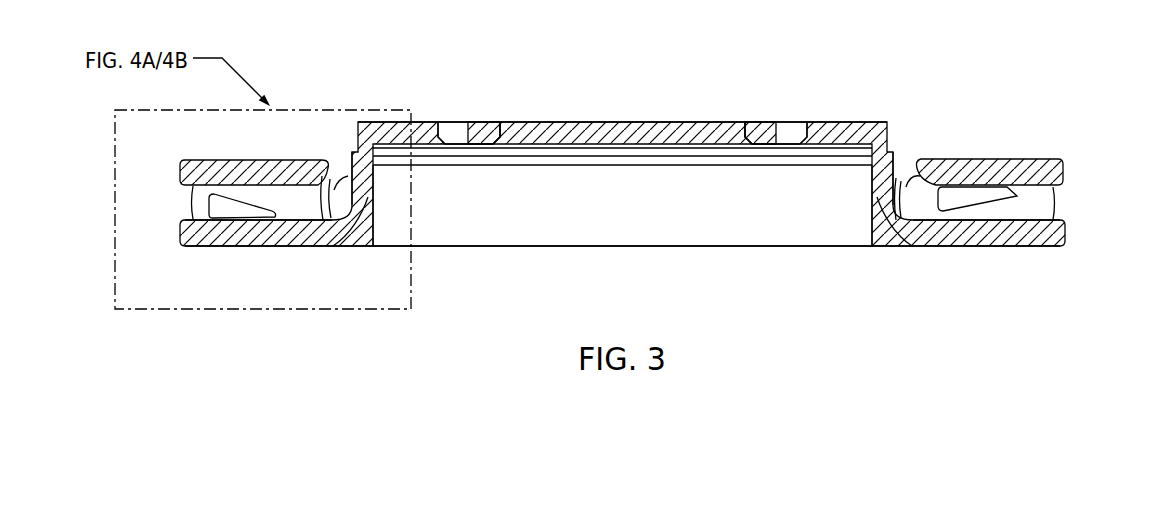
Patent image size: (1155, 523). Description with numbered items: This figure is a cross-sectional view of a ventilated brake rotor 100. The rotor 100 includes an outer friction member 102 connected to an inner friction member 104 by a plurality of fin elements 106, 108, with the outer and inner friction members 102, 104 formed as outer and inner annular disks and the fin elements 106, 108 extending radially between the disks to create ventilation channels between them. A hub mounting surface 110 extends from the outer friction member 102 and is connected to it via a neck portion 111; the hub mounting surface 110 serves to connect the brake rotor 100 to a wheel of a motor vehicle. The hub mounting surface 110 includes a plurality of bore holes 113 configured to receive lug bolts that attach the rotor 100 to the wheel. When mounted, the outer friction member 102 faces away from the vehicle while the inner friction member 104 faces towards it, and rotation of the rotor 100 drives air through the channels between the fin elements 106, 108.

The brake rotor 100 is at (987, 65).
The outer friction member 102 is at (224, 246).
The inner friction member 104 is at (281, 159).
The fin element 106 is at (196, 204).
The fin element 108 is at (1040, 205).
The hub mounting surface 110 is at (833, 130).
The neck portion 111 is at (362, 203).
The bore holes 113 is at (455, 128).